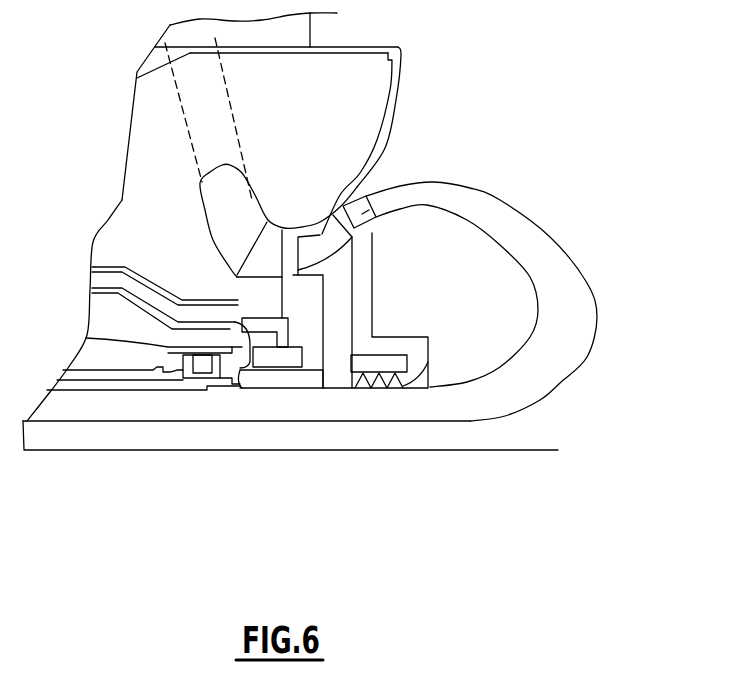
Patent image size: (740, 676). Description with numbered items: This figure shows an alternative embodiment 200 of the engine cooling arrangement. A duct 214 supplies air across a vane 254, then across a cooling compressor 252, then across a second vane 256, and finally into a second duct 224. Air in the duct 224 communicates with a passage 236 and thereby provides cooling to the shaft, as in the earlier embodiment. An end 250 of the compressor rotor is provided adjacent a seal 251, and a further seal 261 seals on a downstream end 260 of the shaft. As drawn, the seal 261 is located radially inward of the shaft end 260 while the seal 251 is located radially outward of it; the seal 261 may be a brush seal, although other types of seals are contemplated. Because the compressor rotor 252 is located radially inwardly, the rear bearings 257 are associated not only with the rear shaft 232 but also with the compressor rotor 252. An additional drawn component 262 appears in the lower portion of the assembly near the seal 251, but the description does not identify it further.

The alternative embodiment 200 is at (596, 193).
The duct 214 is at (212, 115).
The duct 224 is at (563, 281).
The rear shaft 232 is at (102, 387).
The passage 236 is at (377, 407).
The end of the rotor 250 is at (328, 375).
The seal 251 is at (270, 355).
The cooling compressor 252 is at (322, 235).
The vane 254 is at (263, 258).
The vane 256 is at (393, 190).
The rear bearings 257 is at (202, 375).
The downstream end of the shaft 260 is at (385, 355).
The seal 261 is at (402, 387).
The shim 262 is at (228, 378).